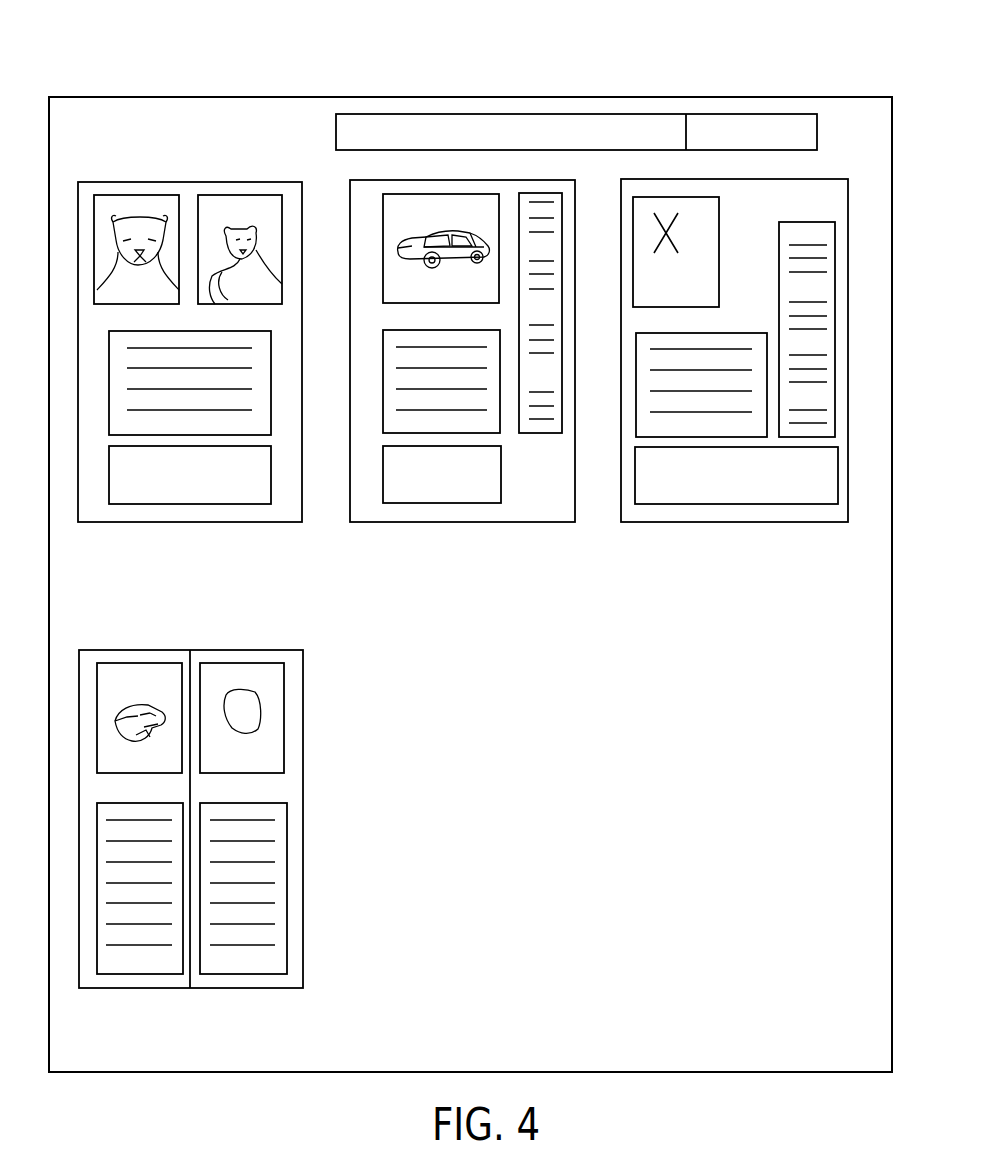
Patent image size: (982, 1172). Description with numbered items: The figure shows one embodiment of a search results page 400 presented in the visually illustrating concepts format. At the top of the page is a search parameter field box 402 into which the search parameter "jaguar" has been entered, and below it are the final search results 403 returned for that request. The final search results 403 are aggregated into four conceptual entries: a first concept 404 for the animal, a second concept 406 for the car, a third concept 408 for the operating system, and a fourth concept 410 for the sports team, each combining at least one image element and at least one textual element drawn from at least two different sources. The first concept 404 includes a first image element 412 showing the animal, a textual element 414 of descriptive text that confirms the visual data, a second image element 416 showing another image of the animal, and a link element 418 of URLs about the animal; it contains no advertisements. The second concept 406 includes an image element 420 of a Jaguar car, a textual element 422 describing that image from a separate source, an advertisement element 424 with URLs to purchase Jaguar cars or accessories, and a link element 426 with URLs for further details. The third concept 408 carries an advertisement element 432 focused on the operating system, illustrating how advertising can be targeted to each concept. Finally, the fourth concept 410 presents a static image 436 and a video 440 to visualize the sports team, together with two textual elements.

The search results page 400 is at (600, 55).
The search parameter field box 402 is at (515, 113).
The final search results 403 is at (515, 703).
The first concept 404 is at (305, 502).
The second concept 406 is at (547, 523).
The third concept 408 is at (773, 523).
The fourth concept 410 is at (305, 677).
The first image element 412 is at (137, 194).
The textual element 414 is at (271, 382).
The second image element 416 is at (240, 194).
The link element 418 is at (192, 505).
The image element 420 is at (442, 193).
The textual element 422 is at (383, 387).
The advertisement element 424 is at (565, 313).
The link element 426 is at (432, 505).
The advertisement element 432 is at (835, 243).
The static image 436 is at (112, 695).
The video 440 is at (260, 738).